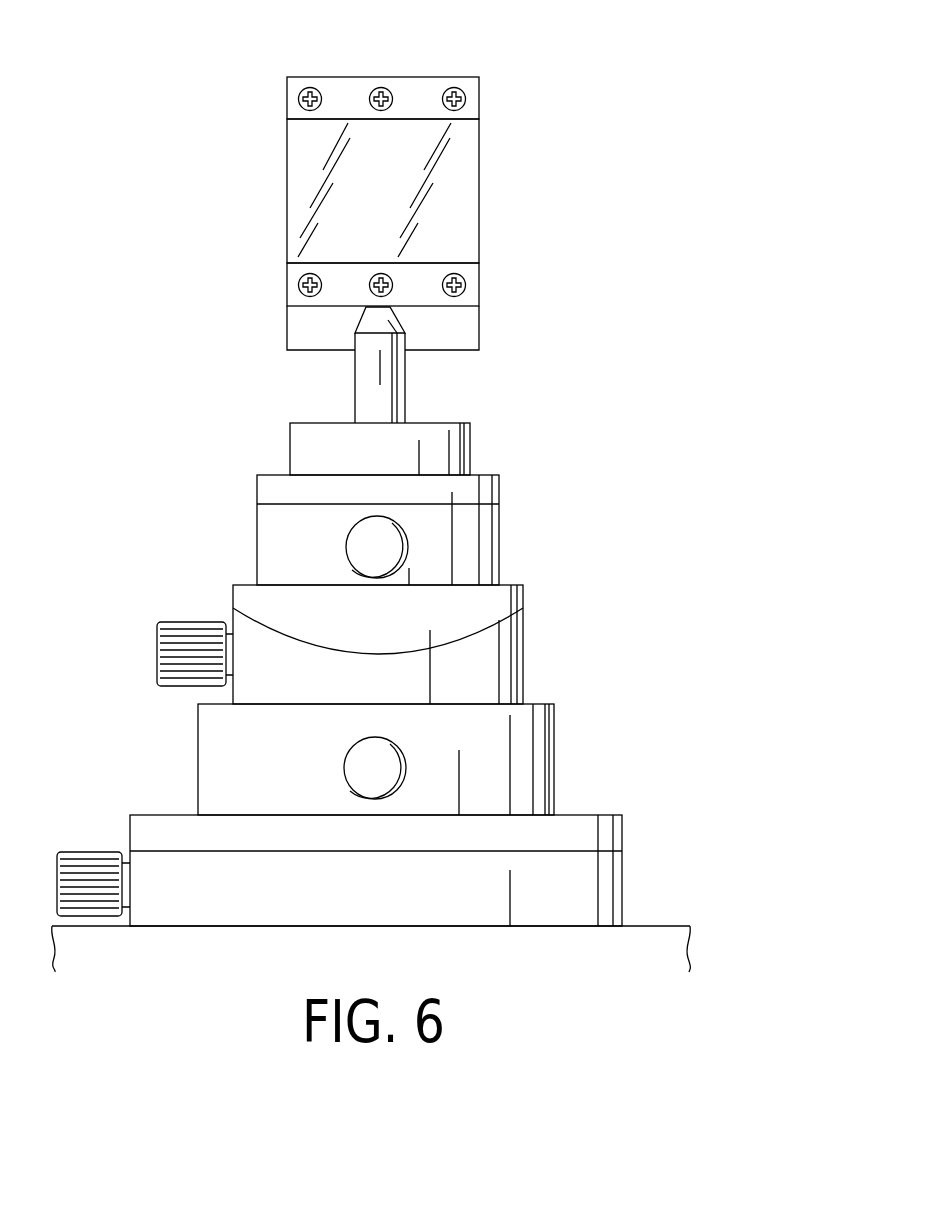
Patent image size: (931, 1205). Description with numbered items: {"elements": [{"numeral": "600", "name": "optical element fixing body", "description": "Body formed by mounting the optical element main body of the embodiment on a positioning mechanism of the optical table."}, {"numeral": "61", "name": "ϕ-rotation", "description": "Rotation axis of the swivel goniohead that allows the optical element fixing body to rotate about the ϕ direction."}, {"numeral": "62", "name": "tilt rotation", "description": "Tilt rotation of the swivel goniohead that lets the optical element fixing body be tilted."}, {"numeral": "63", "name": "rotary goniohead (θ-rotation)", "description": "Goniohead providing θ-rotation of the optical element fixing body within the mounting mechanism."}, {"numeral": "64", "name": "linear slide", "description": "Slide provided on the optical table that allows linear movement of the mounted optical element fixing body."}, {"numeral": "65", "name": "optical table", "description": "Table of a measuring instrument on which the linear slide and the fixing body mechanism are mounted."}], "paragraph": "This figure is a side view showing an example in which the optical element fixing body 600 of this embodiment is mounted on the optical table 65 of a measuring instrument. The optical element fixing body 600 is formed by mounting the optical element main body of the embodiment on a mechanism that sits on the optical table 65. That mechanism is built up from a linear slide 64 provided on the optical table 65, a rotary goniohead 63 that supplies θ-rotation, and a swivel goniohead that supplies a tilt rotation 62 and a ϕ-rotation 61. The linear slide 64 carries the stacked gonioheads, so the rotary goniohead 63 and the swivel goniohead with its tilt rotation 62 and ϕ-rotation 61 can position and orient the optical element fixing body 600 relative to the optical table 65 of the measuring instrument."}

The laser module 600 is at (489, 57).
The first adjustment stage 61 is at (502, 474).
The second adjustment stage 62 is at (525, 584).
The third adjustment stage 63 is at (557, 702).
The base stage 64 is at (625, 812).
The table 65 is at (684, 944).